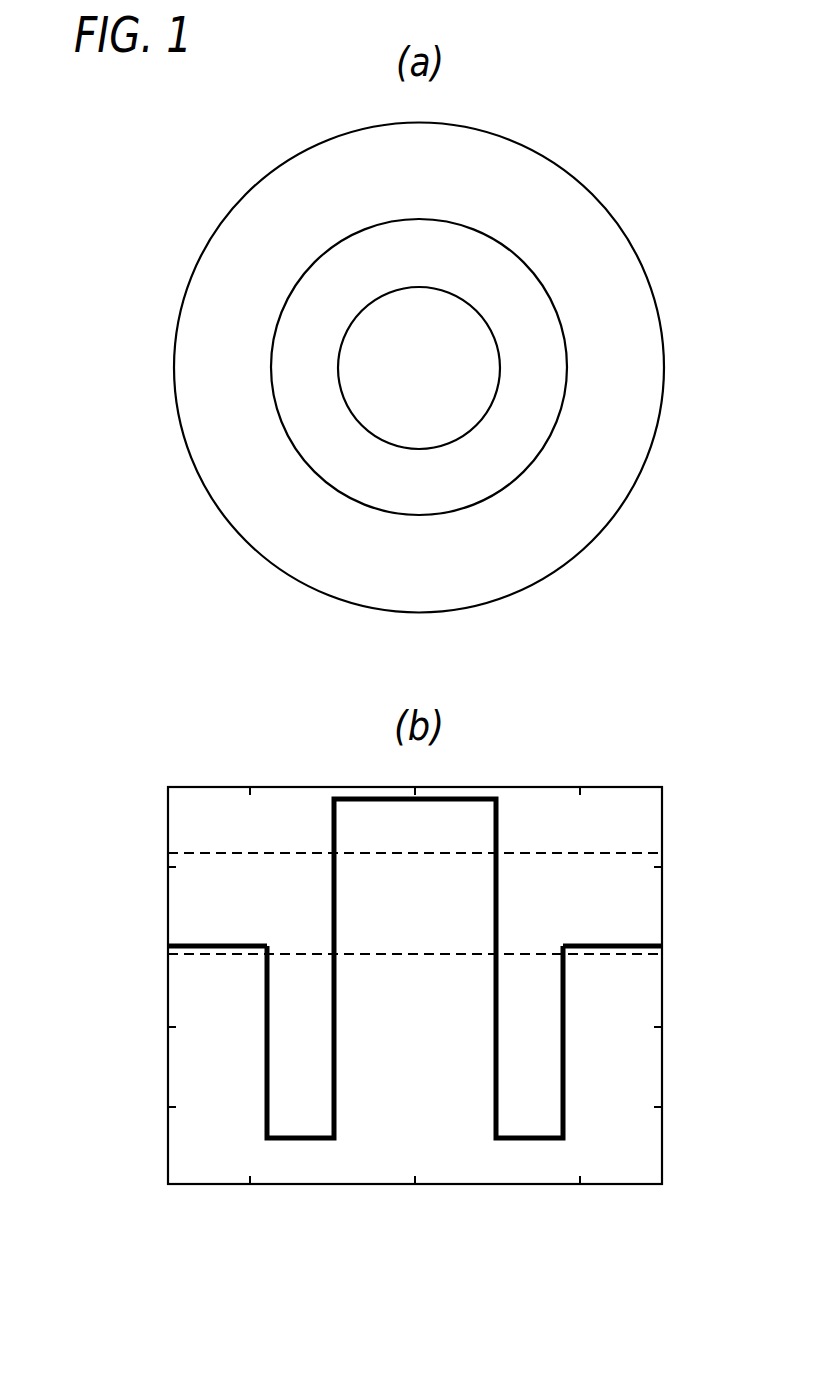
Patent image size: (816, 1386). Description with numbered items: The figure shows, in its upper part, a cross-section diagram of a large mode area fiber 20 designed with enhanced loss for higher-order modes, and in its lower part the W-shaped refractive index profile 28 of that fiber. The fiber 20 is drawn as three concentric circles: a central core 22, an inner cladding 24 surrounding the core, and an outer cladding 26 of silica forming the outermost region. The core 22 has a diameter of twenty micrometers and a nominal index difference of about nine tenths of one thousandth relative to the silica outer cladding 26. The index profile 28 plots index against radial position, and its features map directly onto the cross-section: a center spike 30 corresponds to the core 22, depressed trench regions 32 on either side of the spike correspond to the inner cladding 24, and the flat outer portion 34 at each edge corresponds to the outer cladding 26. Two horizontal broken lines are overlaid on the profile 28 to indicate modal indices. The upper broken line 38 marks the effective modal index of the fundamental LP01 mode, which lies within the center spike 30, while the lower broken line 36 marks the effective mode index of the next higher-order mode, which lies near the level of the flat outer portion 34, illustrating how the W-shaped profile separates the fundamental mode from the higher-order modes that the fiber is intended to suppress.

The LMA fiber 20 is at (566, 147).
The core 22 is at (460, 345).
The inner cladding 24 is at (541, 361).
The outer cladding 26 is at (635, 372).
The W-shaped refractive index profile 28 is at (602, 774).
The center spike 30 is at (418, 801).
The trench regions 32 is at (305, 1140).
The flat outer portion 34 is at (212, 944).
The broken line 36 is at (418, 957).
The broken line 38 is at (414, 856).